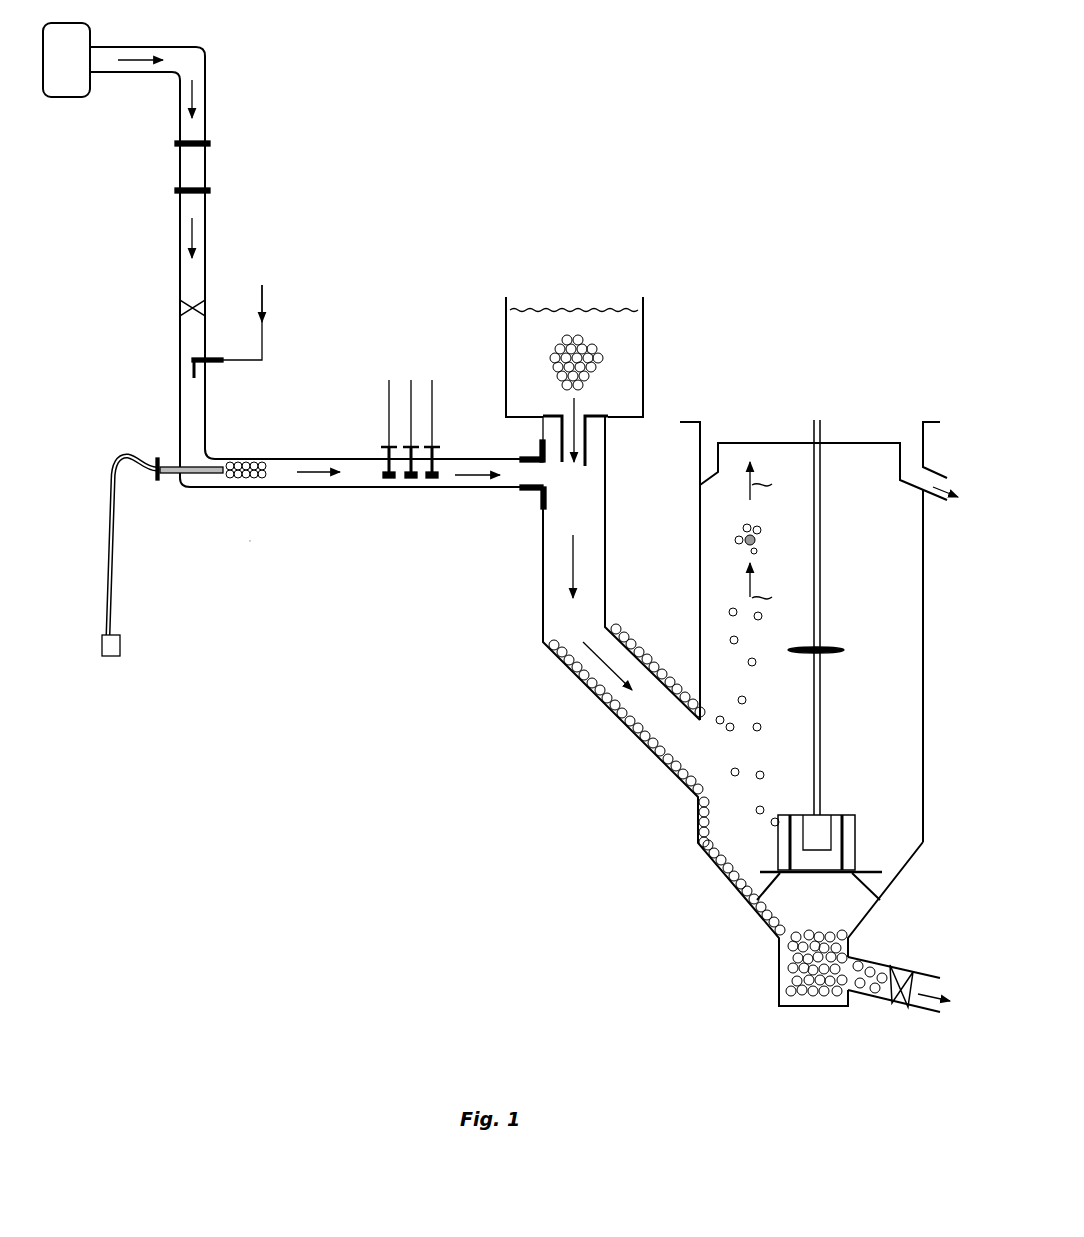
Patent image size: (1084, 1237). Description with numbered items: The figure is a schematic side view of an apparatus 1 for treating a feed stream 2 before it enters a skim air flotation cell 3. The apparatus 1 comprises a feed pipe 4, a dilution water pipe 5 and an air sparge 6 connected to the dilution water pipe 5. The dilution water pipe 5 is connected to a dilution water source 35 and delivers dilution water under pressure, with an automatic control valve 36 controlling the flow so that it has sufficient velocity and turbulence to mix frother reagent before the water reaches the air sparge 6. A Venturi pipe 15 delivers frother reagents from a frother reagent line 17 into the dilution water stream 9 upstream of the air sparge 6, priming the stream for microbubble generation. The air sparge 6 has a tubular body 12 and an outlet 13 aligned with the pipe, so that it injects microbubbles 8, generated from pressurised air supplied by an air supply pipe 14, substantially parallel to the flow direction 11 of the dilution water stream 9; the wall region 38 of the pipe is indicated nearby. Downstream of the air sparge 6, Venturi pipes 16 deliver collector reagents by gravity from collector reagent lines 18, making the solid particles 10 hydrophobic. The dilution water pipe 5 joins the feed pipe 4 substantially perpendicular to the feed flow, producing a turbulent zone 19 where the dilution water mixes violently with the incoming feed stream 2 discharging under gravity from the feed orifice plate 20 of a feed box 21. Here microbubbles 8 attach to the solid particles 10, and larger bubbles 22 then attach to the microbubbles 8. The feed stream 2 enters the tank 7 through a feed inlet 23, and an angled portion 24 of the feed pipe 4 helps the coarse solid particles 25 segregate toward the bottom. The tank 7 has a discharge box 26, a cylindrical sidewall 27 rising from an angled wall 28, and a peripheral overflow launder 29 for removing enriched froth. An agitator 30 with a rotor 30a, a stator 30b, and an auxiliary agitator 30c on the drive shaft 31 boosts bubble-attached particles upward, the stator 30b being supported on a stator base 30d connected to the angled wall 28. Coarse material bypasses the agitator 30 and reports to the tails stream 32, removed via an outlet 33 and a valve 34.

The apparatus 1 is at (390, 212).
The feed stream 2 is at (594, 565).
The skim air flotation cell 3 is at (843, 418).
The feed pipe 4 is at (541, 607).
The dilution water pipe 5 is at (178, 240).
The air sparge 6 is at (166, 490).
The tank 7 is at (700, 498).
The microbubbles 8 is at (245, 481).
The dilution water stream 9 is at (413, 489).
The solid particles 10 is at (590, 352).
The flow direction 11 is at (330, 489).
The tubular body 12 is at (205, 489).
The outlet 13 is at (225, 463).
The air supply pipe 14 is at (132, 452).
The Venturi pipe 15 is at (210, 356).
The Venturi pipes 16 is at (455, 442).
The frother reagent line 17 is at (264, 302).
The collector reagent lines 18 is at (388, 412).
The turbulent zone 19 is at (568, 493).
The feed orifice plate 20 is at (590, 438).
The feed box 21 is at (643, 358).
The bubbles 22 is at (736, 538).
The feed inlet 23 is at (700, 757).
The angled portion 24 is at (597, 698).
The coarse solid particles 25 is at (565, 663).
The discharge box 26 is at (852, 947).
The sidewall 27 is at (700, 576).
The angled wall 28 is at (712, 863).
The overflow launder 29 is at (710, 450).
The agitator 30 is at (888, 600).
The rotor 30a is at (831, 835).
The stator 30b is at (856, 843).
The auxiliary agitator 30c is at (835, 645).
The stator base 30d is at (870, 887).
The drive shaft 31 is at (820, 725).
The tails stream 32 is at (875, 992).
The outlet 33 is at (880, 960).
The valve 34 is at (905, 1007).
The dilution water source 35 is at (72, 37).
The automatic control valve 36 is at (178, 308).
The pipe wall 38 is at (190, 408).